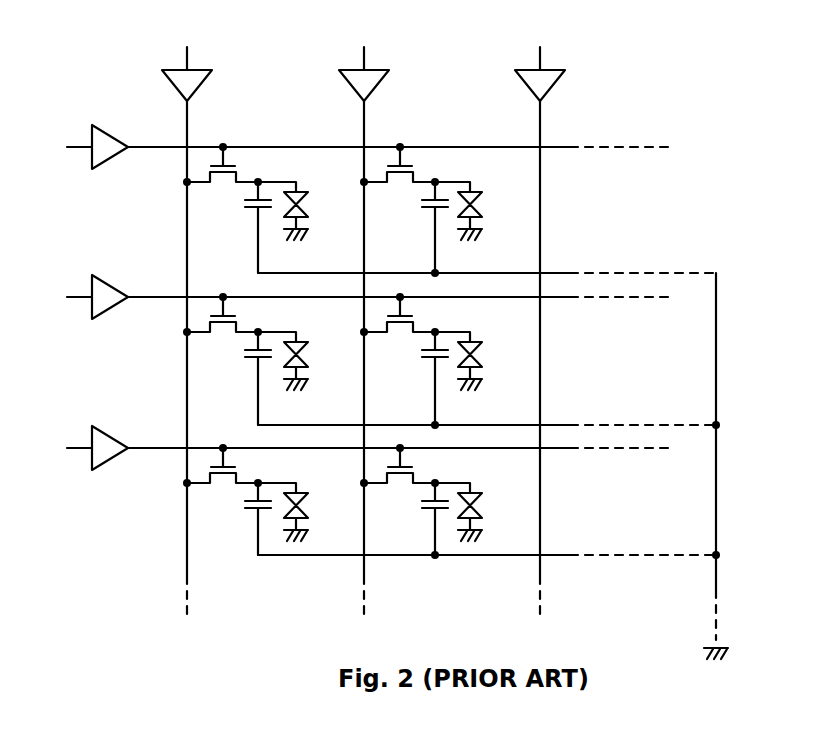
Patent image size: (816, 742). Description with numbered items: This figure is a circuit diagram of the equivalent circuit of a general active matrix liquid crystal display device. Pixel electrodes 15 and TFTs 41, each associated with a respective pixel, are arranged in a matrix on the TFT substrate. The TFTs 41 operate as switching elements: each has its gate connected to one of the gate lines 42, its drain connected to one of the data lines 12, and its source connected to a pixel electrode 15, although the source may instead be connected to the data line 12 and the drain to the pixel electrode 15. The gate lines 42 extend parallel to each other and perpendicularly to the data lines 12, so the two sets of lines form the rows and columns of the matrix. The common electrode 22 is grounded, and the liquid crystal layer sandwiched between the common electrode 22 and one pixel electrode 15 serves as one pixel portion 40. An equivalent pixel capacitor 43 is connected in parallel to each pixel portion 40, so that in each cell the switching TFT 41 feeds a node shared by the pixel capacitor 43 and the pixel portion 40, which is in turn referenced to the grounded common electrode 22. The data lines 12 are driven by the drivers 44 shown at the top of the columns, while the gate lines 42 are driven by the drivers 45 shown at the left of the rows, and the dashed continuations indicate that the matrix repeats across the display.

The data line 12 is at (365, 122).
The pixel electrode 15 is at (300, 192).
The common electrode 22 is at (302, 238).
The pixel portion 40 is at (305, 208).
The TFT 41 is at (222, 181).
The gate line 42 is at (281, 146).
The equivalent pixel capacitor 43 is at (256, 208).
The driver 44 is at (178, 82).
The driver 45 is at (92, 157).